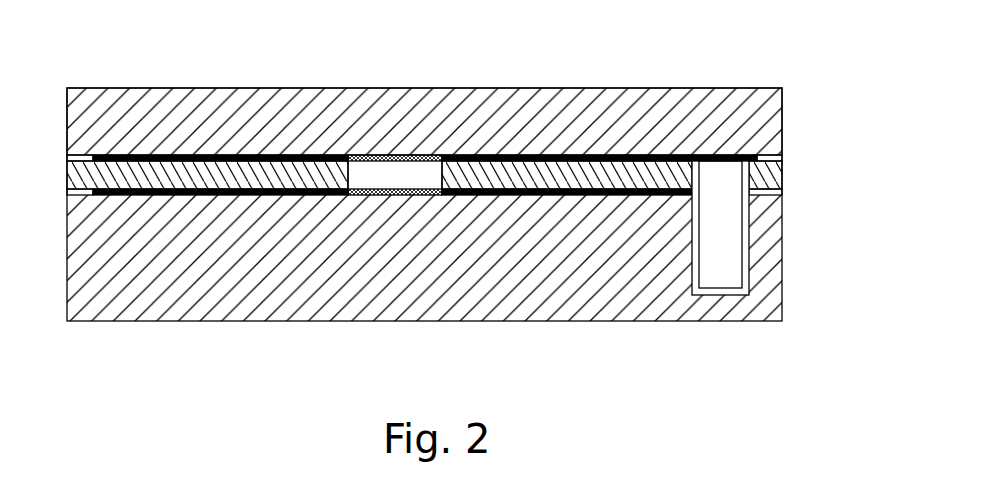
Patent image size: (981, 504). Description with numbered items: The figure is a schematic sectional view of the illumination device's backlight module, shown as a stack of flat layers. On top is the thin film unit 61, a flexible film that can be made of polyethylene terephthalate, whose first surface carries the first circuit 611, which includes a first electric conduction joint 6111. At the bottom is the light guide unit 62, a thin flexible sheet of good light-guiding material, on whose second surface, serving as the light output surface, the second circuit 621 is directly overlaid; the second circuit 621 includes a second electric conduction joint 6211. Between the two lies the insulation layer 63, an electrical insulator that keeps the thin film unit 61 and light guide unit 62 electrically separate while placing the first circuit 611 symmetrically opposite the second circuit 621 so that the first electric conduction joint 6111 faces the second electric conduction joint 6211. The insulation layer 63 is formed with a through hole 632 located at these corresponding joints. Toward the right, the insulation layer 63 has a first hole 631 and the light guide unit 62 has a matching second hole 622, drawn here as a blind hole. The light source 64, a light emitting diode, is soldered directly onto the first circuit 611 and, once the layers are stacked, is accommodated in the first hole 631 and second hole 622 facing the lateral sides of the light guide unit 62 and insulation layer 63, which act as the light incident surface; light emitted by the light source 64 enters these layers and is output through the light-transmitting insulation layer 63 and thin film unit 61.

The thin film unit 61 is at (518, 117).
The first circuit 611 is at (562, 155).
The first electric conduction joint 6111 is at (410, 157).
The through hole 632 is at (428, 157).
The insulation layer 63 is at (643, 155).
The first hole 631 is at (765, 174).
The light guide unit 62 is at (600, 318).
The second circuit 621 is at (260, 188).
The second electric conduction joint 6211 is at (363, 188).
The second hole 622 is at (717, 296).
The light source 64 is at (725, 226).